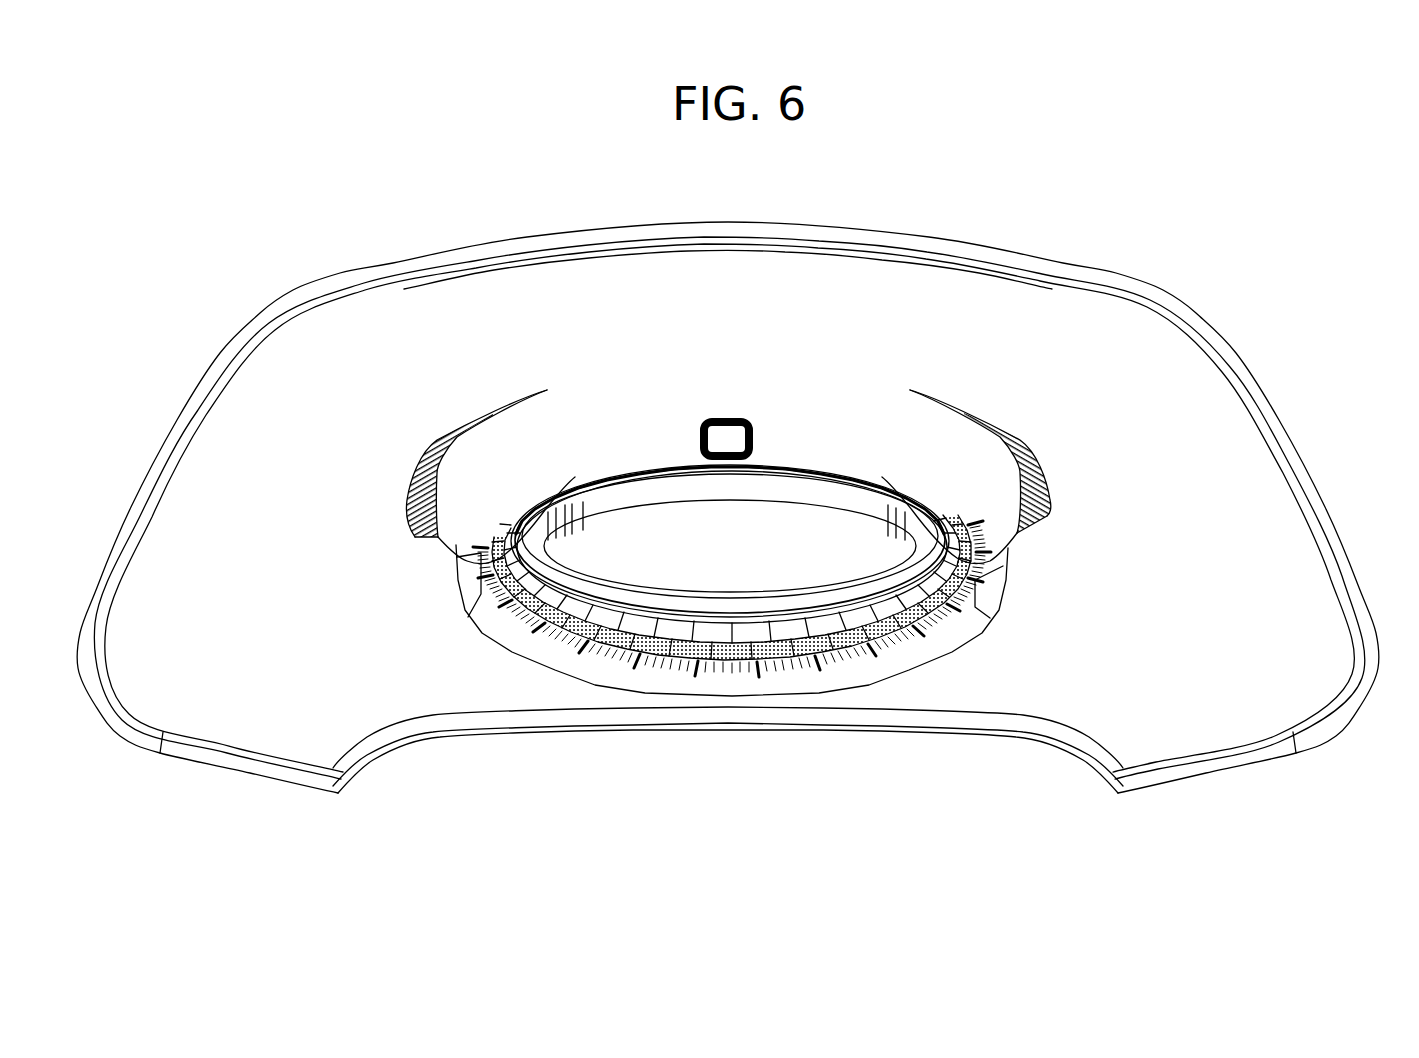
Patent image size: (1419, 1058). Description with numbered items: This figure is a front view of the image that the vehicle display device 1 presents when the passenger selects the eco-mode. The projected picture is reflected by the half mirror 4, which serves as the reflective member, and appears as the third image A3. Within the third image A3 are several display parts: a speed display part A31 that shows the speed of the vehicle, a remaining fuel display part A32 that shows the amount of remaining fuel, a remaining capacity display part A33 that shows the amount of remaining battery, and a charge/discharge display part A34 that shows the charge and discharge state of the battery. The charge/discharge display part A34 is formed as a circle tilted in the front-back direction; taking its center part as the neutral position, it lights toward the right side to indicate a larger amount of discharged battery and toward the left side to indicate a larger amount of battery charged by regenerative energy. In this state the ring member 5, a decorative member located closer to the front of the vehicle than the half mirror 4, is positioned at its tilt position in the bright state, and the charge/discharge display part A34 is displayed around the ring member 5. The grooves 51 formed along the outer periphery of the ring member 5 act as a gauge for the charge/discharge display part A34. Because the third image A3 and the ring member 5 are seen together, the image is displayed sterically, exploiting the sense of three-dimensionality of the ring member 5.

The vehicle display device 1 is at (1176, 236).
The half mirror 4 is at (1210, 437).
The ring member 5 is at (818, 600).
The grooves 51 is at (657, 652).
The third image A3 is at (914, 350).
The speed display part A31 is at (741, 403).
The remaining fuel display part A32 is at (1055, 426).
The remaining capacity display part A33 is at (400, 428).
The charge/discharge display part A34 is at (784, 684).